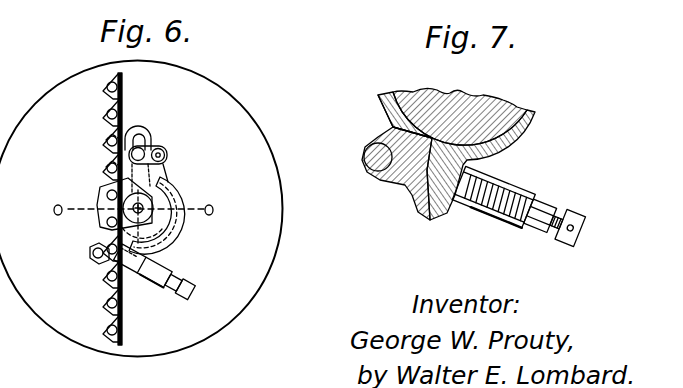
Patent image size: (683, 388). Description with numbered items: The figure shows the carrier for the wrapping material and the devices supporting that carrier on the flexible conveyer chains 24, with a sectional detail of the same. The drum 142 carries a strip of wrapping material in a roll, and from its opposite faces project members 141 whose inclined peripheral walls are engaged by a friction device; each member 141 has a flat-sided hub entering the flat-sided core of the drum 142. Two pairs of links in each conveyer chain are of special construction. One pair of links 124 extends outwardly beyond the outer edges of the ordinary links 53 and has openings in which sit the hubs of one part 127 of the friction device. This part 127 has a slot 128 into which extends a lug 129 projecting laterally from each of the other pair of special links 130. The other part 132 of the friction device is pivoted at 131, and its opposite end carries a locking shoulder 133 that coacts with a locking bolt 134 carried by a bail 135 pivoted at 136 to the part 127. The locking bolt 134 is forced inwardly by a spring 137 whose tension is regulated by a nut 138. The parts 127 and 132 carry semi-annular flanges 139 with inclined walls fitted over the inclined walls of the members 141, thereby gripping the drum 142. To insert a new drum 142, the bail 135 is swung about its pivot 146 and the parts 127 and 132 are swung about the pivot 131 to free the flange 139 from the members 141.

In FIG. 6, the chains 24 is at (104, 298).
In FIG. 6, the links 53 is at (122, 100).
In FIG. 6, the links 124 is at (178, 176).
In FIG. 6, the part of friction device 127 is at (128, 179).
In FIG. 7, the part of friction device 127 is at (385, 107).
In FIG. 6, the slot 128 is at (137, 127).
In FIG. 6, the lug 129 is at (146, 150).
In FIG. 6, the links 130 is at (106, 152).
In FIG. 6, the pivot 131 is at (165, 156).
In FIG. 6, the part of friction device 132 is at (160, 198).
In FIG. 7, the part of friction device 132 is at (534, 125).
In FIG. 7, the locking shoulder 133 is at (447, 223).
In FIG. 6, the locking bolt 134 is at (198, 292).
In FIG. 7, the locking bolt 134 is at (470, 168).
In FIG. 6, the bail 135 is at (160, 292).
In FIG. 7, the bail 135 is at (500, 223).
In FIG. 6, the pivot 136 is at (91, 253).
In FIG. 7, the pivot 136 is at (373, 178).
In FIG. 7, the spring 137 is at (500, 182).
In FIG. 6, the nut 138 is at (176, 275).
In FIG. 7, the nut 138 is at (541, 203).
In FIG. 6, the semi-annular flanges 139 is at (181, 222).
In FIG. 7, the members 141 is at (535, 87).
In FIG. 6, the drum 142 is at (213, 100).
In FIG. 6, the pivot 146 is at (166, 233).